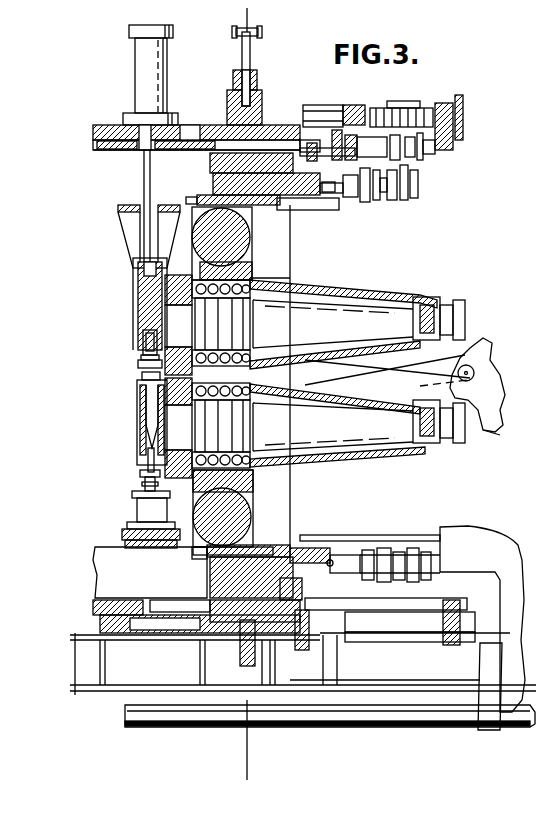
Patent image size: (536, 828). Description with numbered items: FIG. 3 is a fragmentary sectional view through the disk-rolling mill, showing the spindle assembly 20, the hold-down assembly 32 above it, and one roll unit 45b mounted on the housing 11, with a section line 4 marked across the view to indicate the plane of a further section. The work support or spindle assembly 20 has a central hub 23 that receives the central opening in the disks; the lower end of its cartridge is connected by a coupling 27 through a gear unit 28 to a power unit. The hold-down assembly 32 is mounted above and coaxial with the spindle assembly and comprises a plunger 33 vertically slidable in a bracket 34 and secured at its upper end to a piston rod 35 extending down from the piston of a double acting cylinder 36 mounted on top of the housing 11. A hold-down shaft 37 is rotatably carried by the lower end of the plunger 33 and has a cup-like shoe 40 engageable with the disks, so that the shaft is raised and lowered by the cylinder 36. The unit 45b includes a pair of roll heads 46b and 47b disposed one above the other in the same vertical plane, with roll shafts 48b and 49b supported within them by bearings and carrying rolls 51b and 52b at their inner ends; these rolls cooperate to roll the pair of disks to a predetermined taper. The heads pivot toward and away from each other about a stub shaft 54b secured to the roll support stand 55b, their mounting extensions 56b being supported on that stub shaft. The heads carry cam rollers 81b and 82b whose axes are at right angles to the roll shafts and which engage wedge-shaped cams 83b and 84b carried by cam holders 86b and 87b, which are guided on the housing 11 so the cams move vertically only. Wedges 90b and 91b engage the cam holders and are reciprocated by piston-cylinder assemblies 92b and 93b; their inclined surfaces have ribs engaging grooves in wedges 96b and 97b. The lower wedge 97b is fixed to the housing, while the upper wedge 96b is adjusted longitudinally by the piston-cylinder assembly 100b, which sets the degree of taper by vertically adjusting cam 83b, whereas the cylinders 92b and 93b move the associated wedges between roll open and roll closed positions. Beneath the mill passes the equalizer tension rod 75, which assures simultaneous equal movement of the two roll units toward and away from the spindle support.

The section line 4- 4 is at (240, 17).
The housing 11 is at (103, 128).
The double acting cylinder 36 is at (166, 92).
The piston rod 35 is at (143, 181).
The upper wedge 96b is at (262, 152).
The wedge 90b is at (215, 172).
The cam holder 86b is at (210, 197).
The wedge-shaped cam 83b is at (293, 210).
The cam roller 81b is at (250, 242).
The piston-cylinder assembly 100b is at (418, 170).
The piston-cylinder assembly 92b is at (390, 193).
The bracket 34 is at (118, 225).
The hold-down assembly 32 is at (130, 260).
The plunger 33 is at (145, 290).
The hold-down shaft 37 is at (142, 343).
The cup-like shoe 40 is at (138, 365).
The central hub 23 is at (137, 378).
The spindle assembly 20 is at (134, 428).
The coupling 27 is at (142, 474).
The roll 52b is at (133, 503).
The gear unit 28 is at (140, 512).
The roll 51b is at (185, 275).
The roll head 46b is at (357, 287).
The roll shaft 48b is at (328, 330).
The roll unit 45b is at (435, 283).
The roll head 47b is at (353, 468).
The roll shaft 49b is at (323, 435).
The mounting extensions 56b is at (352, 368).
The stub shaft 54b is at (470, 367).
The roll support stand 55b is at (492, 430).
The cam roller 82b is at (248, 522).
The cam holder 87b is at (195, 556).
The wedge 91b is at (215, 578).
The lower wedge 97b is at (292, 598).
The wedge-shaped cam 84b is at (283, 538).
The piston-cylinder assembly 93b is at (392, 552).
The equalizer tension rod 75 is at (200, 724).